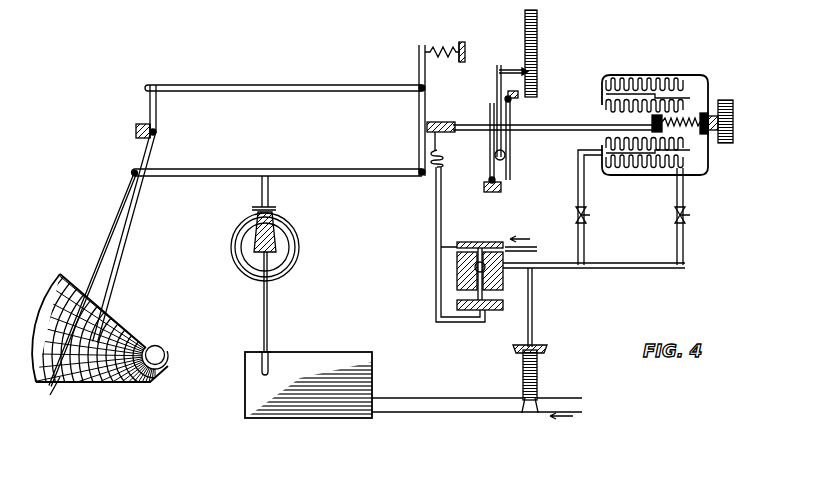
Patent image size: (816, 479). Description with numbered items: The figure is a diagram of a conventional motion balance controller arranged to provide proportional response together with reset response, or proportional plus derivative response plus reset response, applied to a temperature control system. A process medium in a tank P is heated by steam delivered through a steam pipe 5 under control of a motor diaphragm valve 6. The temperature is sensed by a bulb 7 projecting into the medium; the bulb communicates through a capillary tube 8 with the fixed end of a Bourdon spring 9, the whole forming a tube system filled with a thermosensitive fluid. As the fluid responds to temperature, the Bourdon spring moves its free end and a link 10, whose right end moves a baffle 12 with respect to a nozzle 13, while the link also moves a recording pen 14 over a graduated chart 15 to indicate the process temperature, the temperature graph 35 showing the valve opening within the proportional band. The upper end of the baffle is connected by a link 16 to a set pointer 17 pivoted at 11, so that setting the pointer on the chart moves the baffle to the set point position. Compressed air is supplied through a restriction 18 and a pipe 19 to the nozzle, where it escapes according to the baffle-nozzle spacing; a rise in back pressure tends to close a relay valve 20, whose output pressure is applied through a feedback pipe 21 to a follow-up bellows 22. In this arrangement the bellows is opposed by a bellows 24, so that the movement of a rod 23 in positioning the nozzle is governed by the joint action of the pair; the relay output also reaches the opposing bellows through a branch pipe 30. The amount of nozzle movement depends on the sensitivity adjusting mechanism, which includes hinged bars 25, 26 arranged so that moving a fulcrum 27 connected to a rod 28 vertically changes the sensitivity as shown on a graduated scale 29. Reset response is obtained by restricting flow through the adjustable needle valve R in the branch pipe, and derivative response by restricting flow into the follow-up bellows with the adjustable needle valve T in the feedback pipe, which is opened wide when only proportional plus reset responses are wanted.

The steam pipe 5 is at (563, 400).
The motor diaphragm valve 6 is at (522, 368).
The bulb 7 is at (262, 361).
The capillary tube 8 is at (270, 307).
The Bourdon spring 9 is at (297, 236).
The link 10 is at (327, 168).
The pivot 11 is at (157, 132).
The baffle 12 is at (418, 118).
The nozzle 13 is at (435, 120).
The recording pen 14 is at (110, 242).
The graduated chart 15 is at (133, 323).
The link 16 is at (235, 85).
The set pointer 17 is at (150, 108).
The restriction 18 is at (449, 250).
The pipe 19 is at (437, 212).
The relay valve 20 is at (490, 247).
The feedback pipe 21 is at (610, 270).
The follow-up bellows 22 is at (649, 135).
The rod 23 is at (571, 125).
The bellows 24 is at (630, 151).
The hinged bar 25 is at (511, 144).
The hinged bar 26 is at (491, 107).
The fulcrum 27 is at (505, 158).
The rod 28 is at (470, 140).
The graduated scale 29 is at (538, 52).
The branch pipe 30 is at (588, 207).
The temperature graph 35 is at (48, 399).
The tank P is at (373, 359).
The adjustable needle valve R is at (568, 193).
The adjustable needle valve T is at (715, 216).